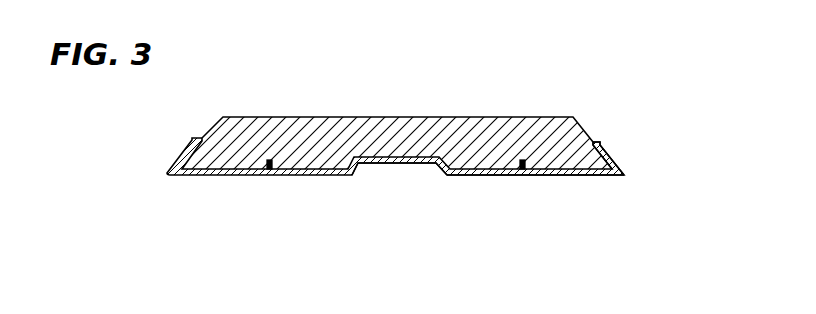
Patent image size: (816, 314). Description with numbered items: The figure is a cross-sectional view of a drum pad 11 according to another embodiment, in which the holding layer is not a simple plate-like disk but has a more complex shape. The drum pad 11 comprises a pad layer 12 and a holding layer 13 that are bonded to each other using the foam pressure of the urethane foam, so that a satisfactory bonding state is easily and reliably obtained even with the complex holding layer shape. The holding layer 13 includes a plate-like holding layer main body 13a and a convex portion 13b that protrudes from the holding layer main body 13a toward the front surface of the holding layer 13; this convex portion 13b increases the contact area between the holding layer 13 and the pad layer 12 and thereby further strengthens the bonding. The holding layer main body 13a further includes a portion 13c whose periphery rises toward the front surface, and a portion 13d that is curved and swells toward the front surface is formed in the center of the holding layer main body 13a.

The drum pad 11 is at (416, 154).
The pad layer 12 is at (580, 124).
The holding layer 13 is at (402, 203).
The holding layer main body 13a is at (455, 176).
The convex portion 13b is at (397, 193).
The portion whose periphery rises toward the front surface 13c is at (628, 158).
The curved and swelling portion 13d is at (380, 164).